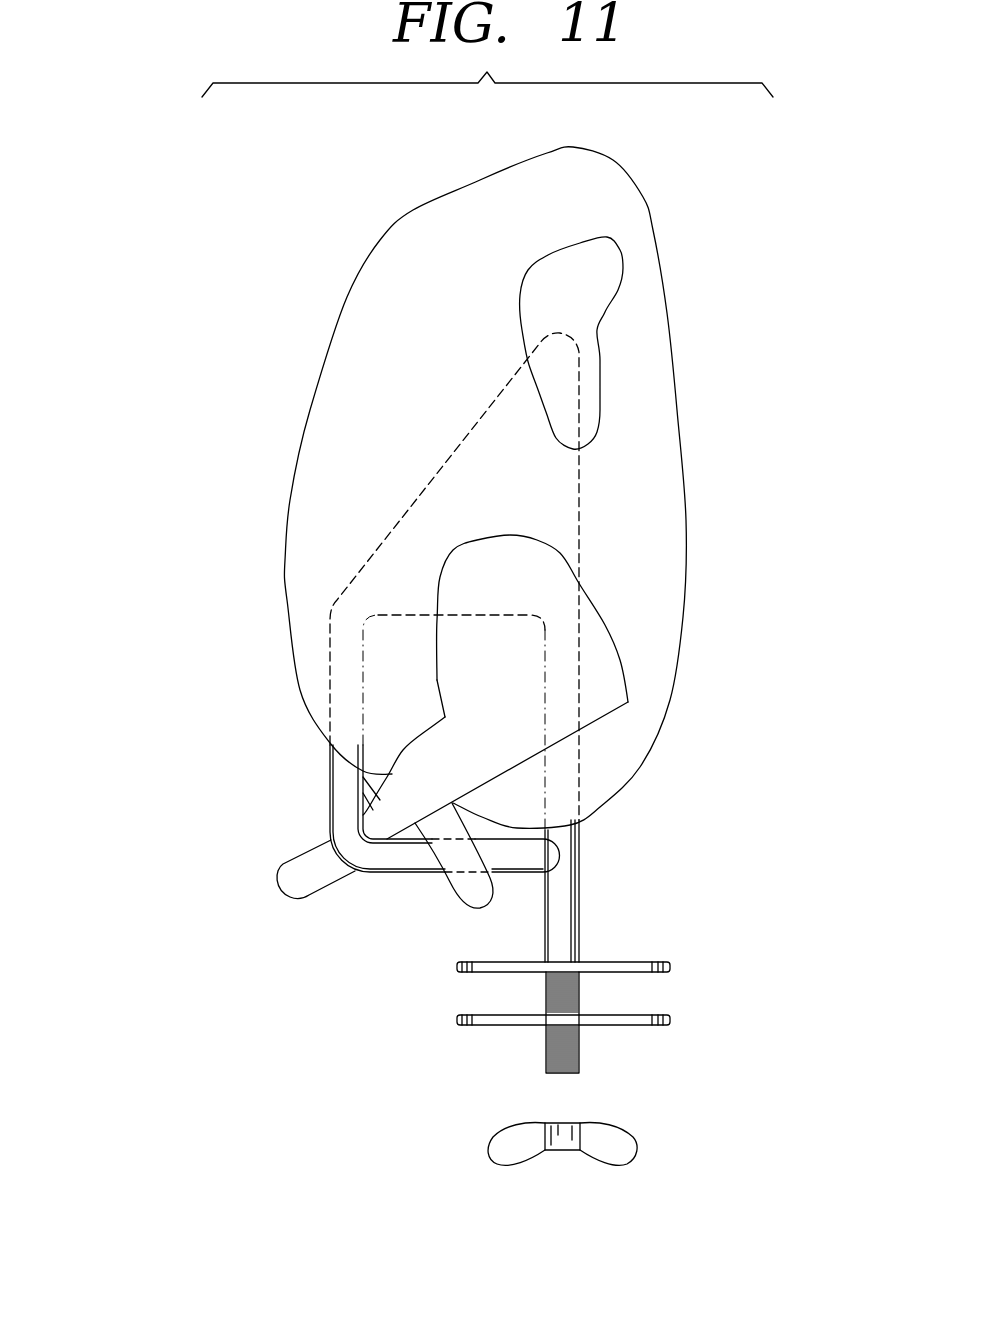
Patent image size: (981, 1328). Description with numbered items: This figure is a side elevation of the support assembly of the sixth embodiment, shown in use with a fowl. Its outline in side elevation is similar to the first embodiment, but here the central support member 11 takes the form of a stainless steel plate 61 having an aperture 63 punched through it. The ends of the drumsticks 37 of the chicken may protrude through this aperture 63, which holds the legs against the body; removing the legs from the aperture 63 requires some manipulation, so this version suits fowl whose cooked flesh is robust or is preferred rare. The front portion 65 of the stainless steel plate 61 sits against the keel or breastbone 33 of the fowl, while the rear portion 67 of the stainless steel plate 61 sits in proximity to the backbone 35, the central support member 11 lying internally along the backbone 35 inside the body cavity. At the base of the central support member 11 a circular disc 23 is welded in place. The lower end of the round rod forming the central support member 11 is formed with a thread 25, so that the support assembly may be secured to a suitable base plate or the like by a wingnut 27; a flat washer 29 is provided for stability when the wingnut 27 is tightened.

The central support member 11 is at (432, 413).
The circular disc 23 is at (670, 968).
The lower end of the round rod / thread 25 is at (580, 1037).
The wingnut 27 is at (640, 1142).
The flat washer 29 is at (670, 1018).
The breastbone or keel 33 is at (324, 643).
The backbone 35 is at (146, 857).
The drumsticks 37 is at (302, 888).
The stainless steel plate 61 is at (352, 598).
The aperture 63 is at (417, 707).
The front portion 65 is at (330, 693).
The rear portion 67 is at (580, 498).